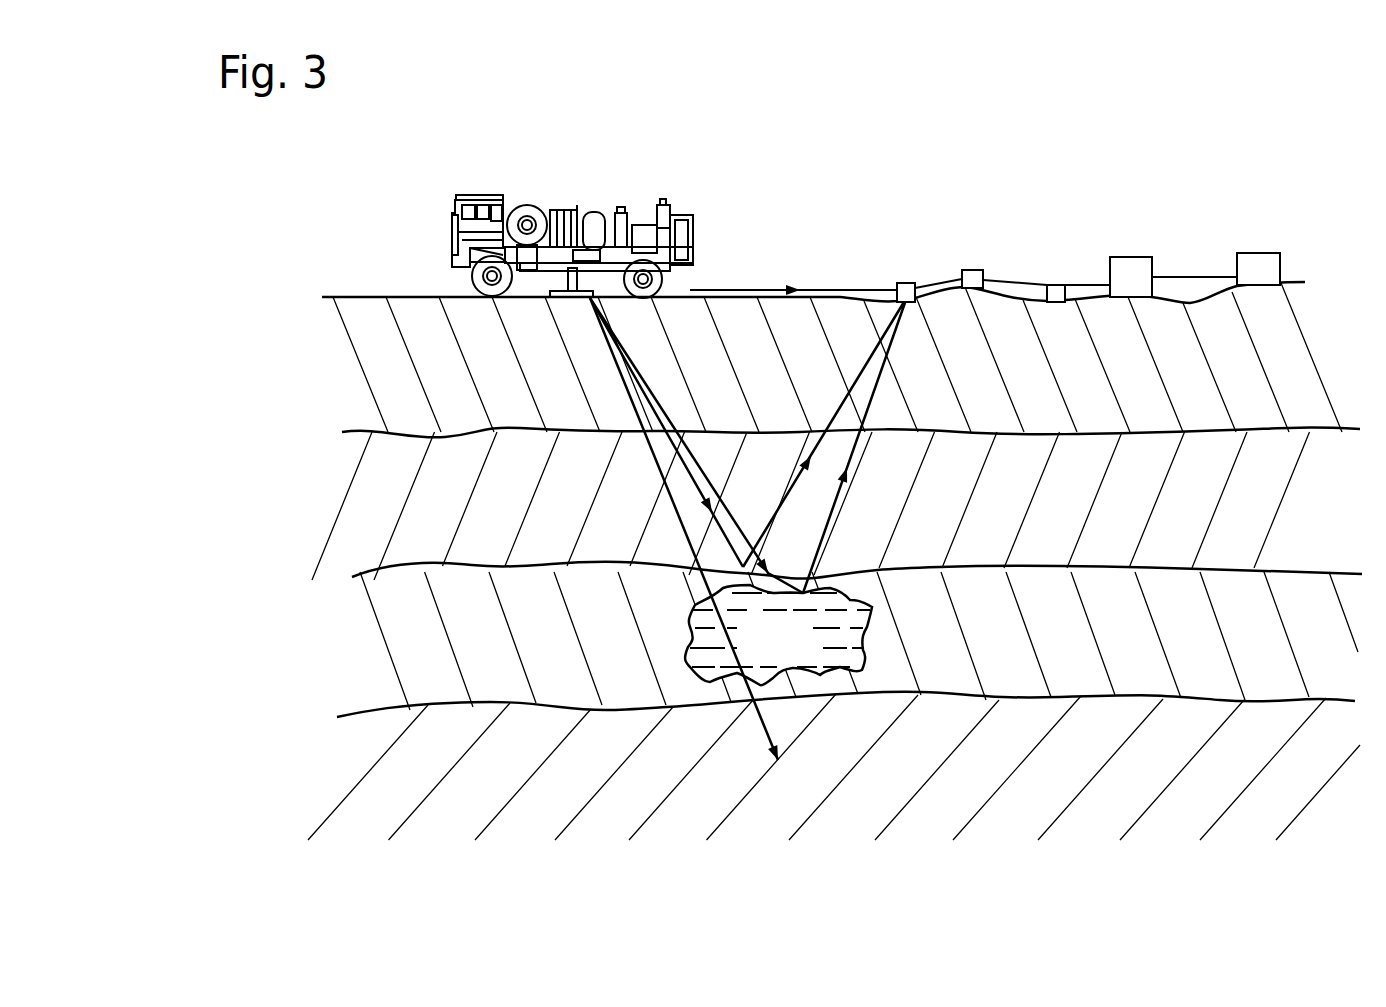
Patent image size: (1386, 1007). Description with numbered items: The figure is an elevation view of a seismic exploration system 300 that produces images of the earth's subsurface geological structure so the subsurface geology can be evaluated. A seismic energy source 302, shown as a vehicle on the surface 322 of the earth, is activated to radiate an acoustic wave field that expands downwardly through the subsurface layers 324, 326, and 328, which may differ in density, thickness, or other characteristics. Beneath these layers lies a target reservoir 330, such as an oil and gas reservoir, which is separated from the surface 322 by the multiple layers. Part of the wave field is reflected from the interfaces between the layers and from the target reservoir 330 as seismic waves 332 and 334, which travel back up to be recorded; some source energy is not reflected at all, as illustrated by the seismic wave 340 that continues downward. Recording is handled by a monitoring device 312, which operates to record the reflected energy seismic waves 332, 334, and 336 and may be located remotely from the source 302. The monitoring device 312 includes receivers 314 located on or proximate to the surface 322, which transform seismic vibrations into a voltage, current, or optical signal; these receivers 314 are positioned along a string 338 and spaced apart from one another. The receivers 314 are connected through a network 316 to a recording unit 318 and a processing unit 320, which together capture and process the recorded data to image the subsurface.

The seismic exploration system 300 is at (568, 88).
The seismic energy source 302 is at (690, 212).
The monitoring device 312 is at (1200, 222).
The receiver 314 is at (901, 283).
The network 316 is at (1200, 275).
The recording unit 318 is at (1133, 257).
The processing unit 320 is at (1258, 253).
The surface 322 is at (766, 290).
The subsurface layer 324 is at (414, 401).
The subsurface layer 326 is at (387, 534).
The subsurface layer 328 is at (380, 683).
The target reservoir 330 is at (797, 647).
The seismic wave 332 is at (692, 480).
The seismic wave 334 is at (826, 530).
The seismic wave 336 is at (818, 289).
The string 338 is at (1018, 282).
The seismic wave 340 is at (757, 707).